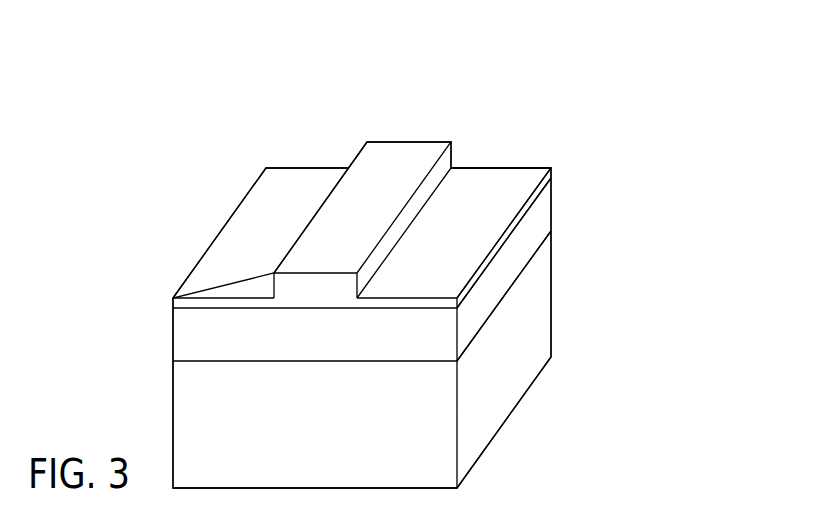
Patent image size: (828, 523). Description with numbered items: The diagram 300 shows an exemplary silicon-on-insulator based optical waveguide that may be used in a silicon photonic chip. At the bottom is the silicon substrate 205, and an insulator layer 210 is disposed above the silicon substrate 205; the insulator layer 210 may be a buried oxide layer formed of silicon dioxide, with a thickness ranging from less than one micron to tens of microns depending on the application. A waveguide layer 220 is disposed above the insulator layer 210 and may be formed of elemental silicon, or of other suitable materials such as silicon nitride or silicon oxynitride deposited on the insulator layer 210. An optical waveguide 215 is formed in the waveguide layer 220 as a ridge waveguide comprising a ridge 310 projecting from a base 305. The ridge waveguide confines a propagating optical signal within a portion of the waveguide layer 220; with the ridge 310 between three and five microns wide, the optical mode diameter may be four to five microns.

The diagram 300 is at (618, 38).
The silicon substrate 205 is at (552, 310).
The insulator layer 210 is at (552, 198).
The ridge 310 is at (297, 205).
The base 305 is at (241, 263).
The optical waveguide 215 is at (413, 141).
The waveguide layer 220 is at (565, 130).